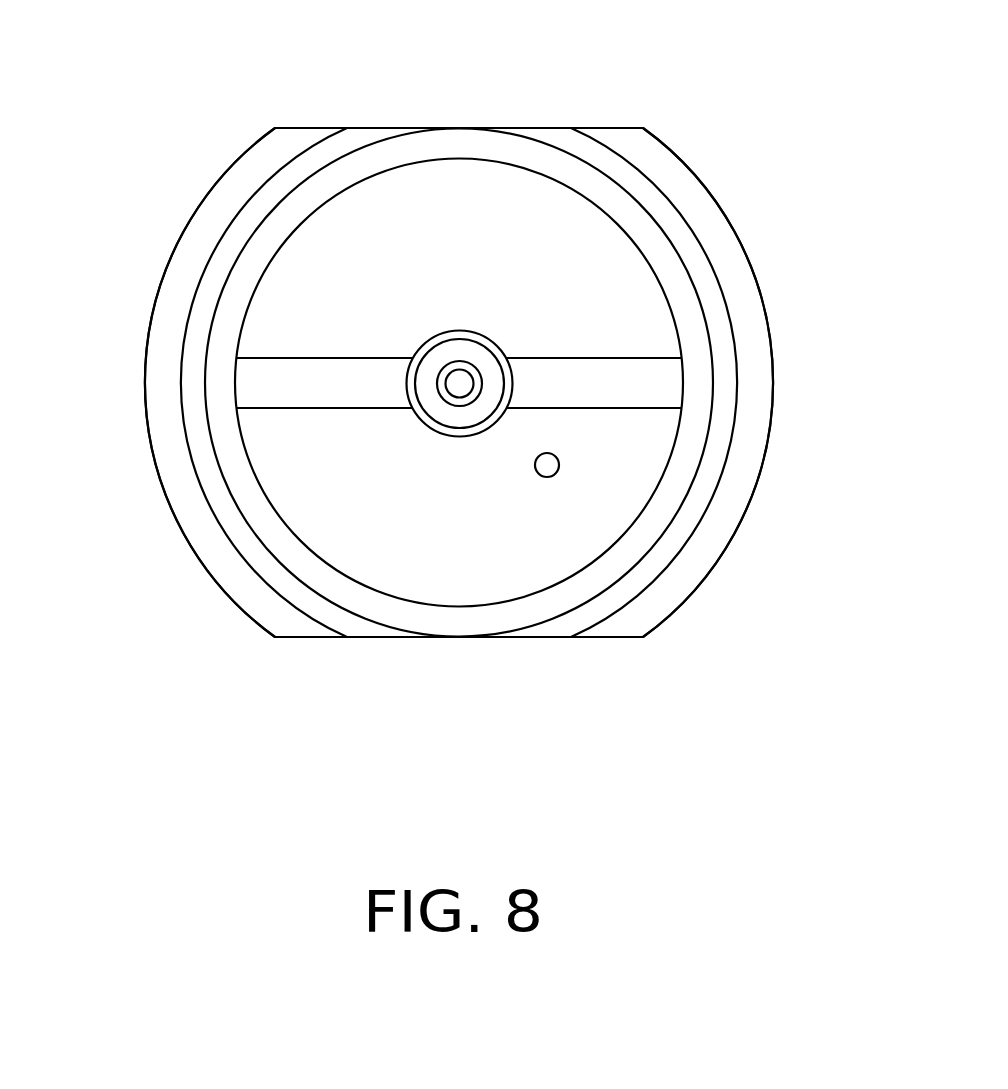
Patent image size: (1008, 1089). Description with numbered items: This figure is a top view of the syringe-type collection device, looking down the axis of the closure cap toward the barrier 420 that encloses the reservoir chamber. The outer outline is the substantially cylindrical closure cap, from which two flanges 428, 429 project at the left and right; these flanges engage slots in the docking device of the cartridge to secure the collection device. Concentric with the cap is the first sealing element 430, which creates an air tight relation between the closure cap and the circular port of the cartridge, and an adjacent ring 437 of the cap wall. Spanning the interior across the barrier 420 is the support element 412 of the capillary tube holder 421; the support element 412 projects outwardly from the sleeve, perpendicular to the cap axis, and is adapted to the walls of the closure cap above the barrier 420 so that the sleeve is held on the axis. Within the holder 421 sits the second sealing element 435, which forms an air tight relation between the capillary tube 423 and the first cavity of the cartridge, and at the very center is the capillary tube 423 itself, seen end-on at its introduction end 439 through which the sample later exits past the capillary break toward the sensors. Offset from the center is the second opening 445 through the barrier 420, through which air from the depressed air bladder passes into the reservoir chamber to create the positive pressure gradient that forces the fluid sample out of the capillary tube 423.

The first sealing element 430 is at (538, 132).
The rim 437 is at (382, 155).
The second sealing element 435 is at (467, 330).
The capillary tube holder 421 is at (483, 355).
The introduction end 439 is at (447, 370).
The capillary tube 423 is at (450, 400).
The support element 412 is at (365, 382).
The flange 428 is at (163, 409).
The flange 429 is at (758, 403).
The barrier 420 is at (445, 573).
The second opening 445 is at (537, 477).